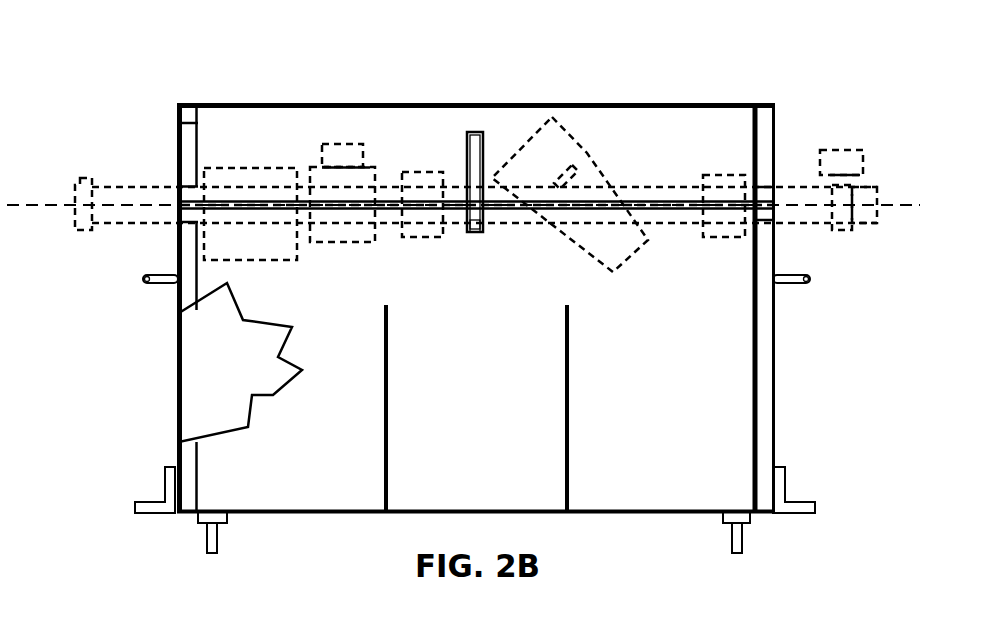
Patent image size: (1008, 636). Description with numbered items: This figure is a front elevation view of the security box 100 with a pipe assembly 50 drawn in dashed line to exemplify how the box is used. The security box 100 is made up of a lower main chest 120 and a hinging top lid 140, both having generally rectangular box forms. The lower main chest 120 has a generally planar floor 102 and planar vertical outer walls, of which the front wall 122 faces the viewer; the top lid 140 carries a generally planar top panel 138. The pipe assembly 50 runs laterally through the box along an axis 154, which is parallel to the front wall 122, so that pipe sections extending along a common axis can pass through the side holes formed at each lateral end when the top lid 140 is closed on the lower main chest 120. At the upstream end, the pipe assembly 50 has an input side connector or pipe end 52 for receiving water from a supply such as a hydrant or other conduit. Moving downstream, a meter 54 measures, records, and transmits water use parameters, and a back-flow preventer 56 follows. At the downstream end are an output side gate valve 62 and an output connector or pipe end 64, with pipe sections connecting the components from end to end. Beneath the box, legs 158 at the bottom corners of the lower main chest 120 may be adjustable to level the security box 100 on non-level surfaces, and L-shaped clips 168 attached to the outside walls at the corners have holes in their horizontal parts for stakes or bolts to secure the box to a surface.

The security box 100 is at (207, 67).
The pipe assembly 50 is at (393, 138).
The input side connector or pipe end 52 is at (87, 178).
The meter 54 is at (273, 177).
The back-flow preventer 56 is at (535, 130).
The output side gate valve 62 is at (842, 232).
The output connector or pipe end 64 is at (875, 187).
The floor 102 is at (487, 510).
The lower main chest 120 is at (800, 413).
The front wall 122 is at (238, 371).
The top panel 138 is at (628, 103).
The top lid 140 is at (798, 112).
The axis 154 is at (42, 207).
The legs 158 is at (202, 525).
The clips 168 is at (135, 502).